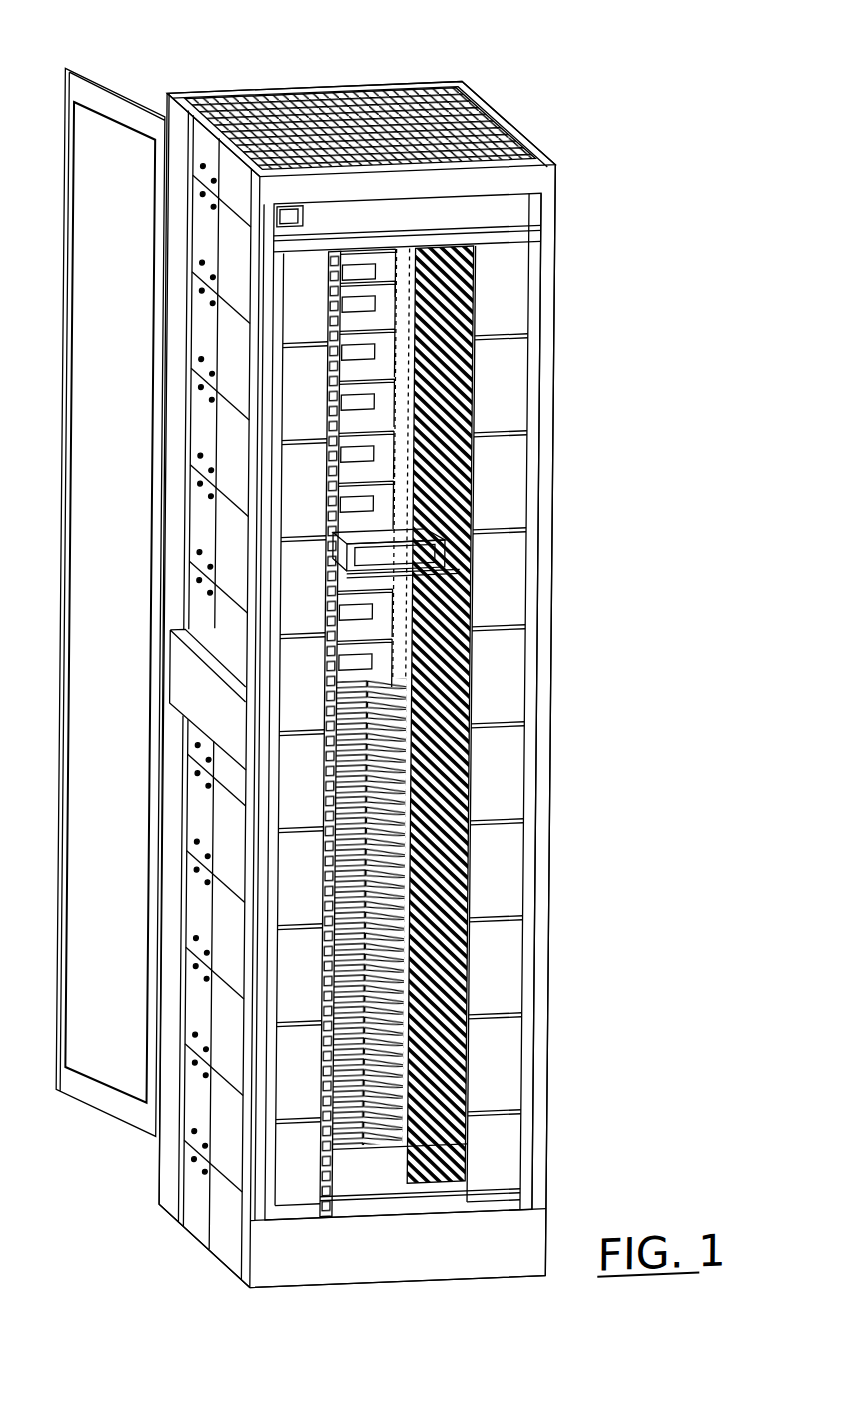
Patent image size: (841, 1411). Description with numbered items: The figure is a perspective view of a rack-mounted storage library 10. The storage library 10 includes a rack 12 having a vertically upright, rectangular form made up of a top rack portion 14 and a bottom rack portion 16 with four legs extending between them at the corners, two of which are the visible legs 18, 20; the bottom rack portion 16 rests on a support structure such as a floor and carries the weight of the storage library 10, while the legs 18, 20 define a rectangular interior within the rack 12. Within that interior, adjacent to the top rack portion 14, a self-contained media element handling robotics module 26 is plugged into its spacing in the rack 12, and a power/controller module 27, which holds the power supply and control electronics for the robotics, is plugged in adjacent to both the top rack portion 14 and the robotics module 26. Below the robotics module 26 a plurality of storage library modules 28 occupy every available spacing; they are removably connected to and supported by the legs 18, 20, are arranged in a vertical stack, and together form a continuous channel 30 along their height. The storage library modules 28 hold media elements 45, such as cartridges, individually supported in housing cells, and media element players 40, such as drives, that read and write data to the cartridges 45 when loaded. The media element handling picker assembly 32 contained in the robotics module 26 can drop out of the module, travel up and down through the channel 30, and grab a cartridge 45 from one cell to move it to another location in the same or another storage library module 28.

The storage library 10 is at (605, 100).
The rack 12 is at (574, 368).
The top rack portion 14 is at (547, 200).
The bottom rack portion 16 is at (541, 1277).
The leg 18 is at (268, 1132).
The leg 20 is at (558, 1112).
The media element handling robotics module 26 is at (532, 249).
The power/controller module 27 is at (309, 120).
The storage library module 28 is at (514, 800).
The channel 30 is at (389, 1188).
The media element handling picker assembly 32 is at (423, 572).
The media element player 40 is at (384, 458).
The media element 45 is at (481, 922).